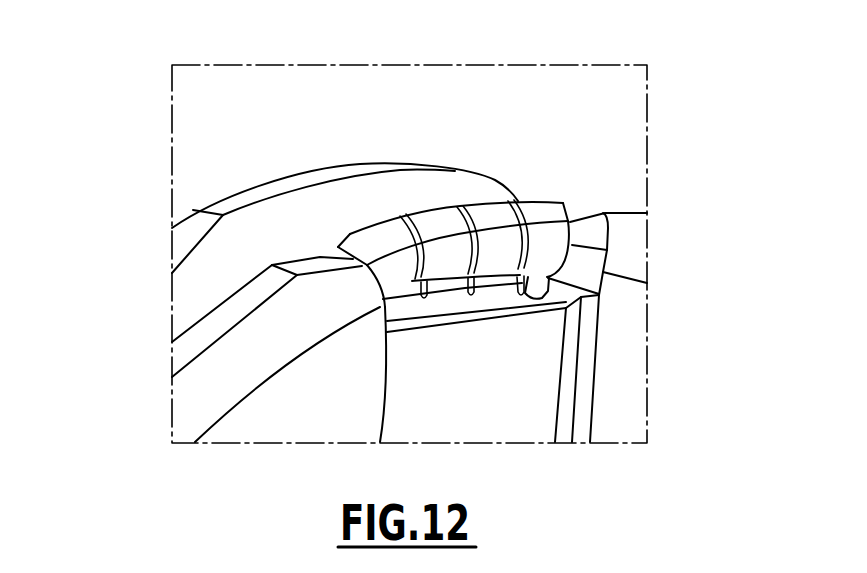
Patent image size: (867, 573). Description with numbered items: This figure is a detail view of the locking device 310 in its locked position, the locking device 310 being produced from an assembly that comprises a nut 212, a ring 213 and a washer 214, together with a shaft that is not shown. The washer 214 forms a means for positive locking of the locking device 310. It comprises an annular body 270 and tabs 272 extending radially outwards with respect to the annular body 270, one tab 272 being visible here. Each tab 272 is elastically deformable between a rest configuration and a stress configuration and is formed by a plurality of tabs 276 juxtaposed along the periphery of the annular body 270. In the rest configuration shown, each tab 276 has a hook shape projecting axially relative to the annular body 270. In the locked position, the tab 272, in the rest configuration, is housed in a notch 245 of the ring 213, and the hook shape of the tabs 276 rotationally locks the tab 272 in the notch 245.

The nut 212 is at (230, 262).
The ring 213 is at (671, 327).
The washer 214 is at (381, 119).
The notch 245 is at (585, 155).
The annular body 270 is at (423, 310).
The tab 272 is at (453, 145).
The tab 276 is at (395, 268).
The locking device 310 is at (409, 254).